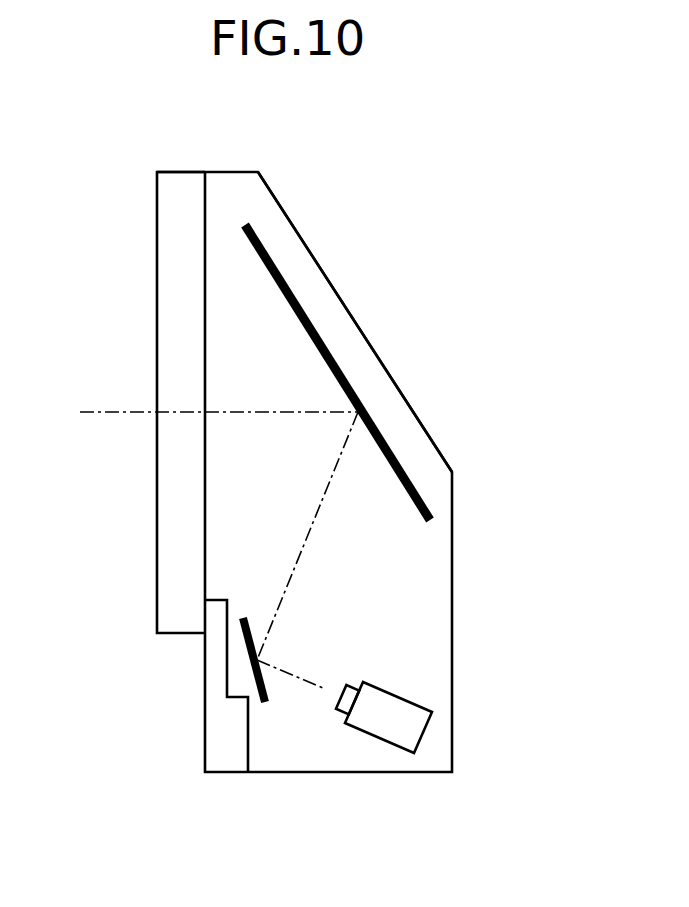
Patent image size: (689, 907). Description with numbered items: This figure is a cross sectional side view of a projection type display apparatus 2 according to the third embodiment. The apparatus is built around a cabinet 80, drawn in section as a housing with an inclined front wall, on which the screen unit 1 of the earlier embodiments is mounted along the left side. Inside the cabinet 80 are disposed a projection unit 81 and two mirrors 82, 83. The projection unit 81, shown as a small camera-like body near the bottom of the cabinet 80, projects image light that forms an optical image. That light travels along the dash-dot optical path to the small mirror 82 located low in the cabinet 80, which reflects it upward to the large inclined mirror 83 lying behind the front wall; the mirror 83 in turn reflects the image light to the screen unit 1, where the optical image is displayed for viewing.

The screen unit 1 is at (181, 537).
The projection type display apparatus 2 is at (243, 166).
The cabinet 80 is at (418, 417).
The projection unit 81 is at (403, 698).
The mirror 82 is at (268, 688).
The mirror 83 is at (412, 498).